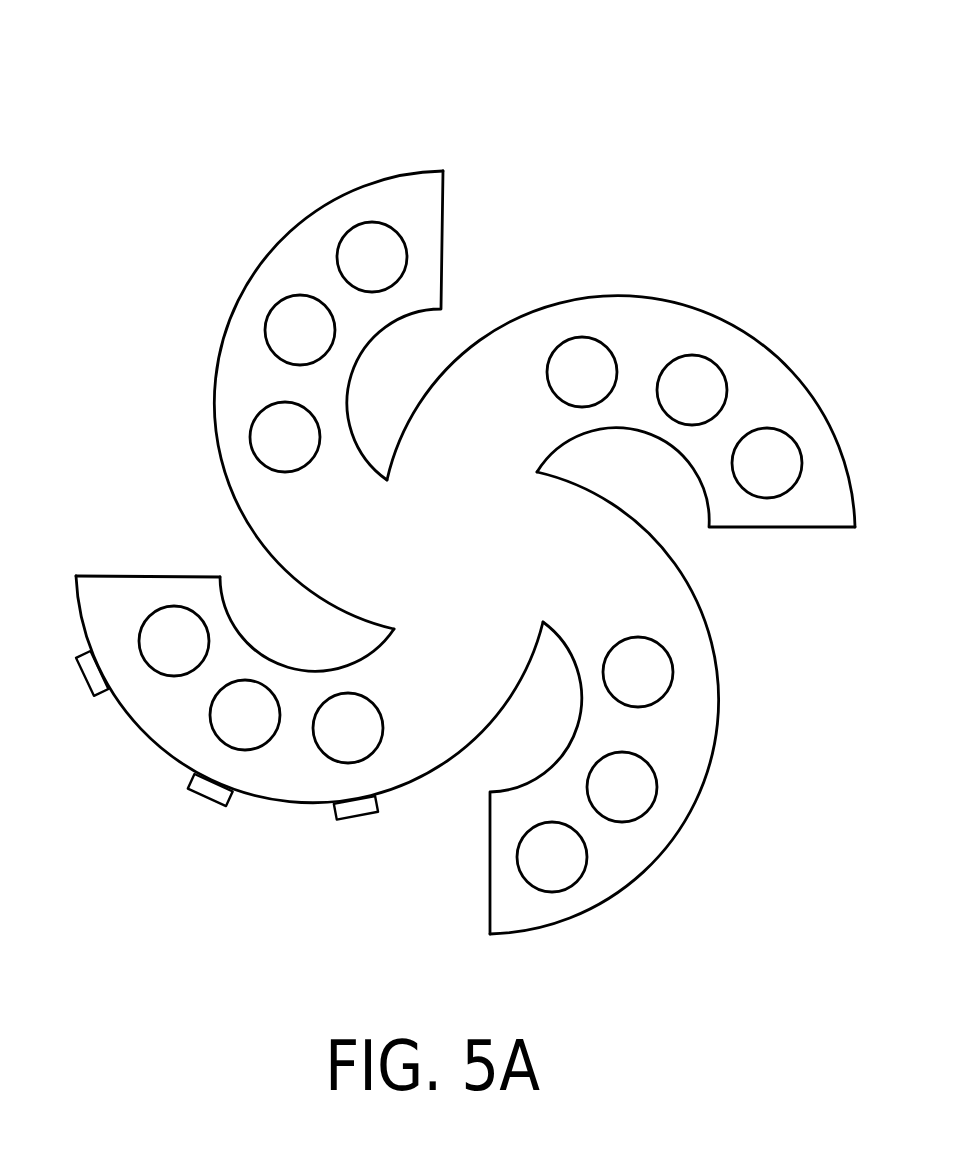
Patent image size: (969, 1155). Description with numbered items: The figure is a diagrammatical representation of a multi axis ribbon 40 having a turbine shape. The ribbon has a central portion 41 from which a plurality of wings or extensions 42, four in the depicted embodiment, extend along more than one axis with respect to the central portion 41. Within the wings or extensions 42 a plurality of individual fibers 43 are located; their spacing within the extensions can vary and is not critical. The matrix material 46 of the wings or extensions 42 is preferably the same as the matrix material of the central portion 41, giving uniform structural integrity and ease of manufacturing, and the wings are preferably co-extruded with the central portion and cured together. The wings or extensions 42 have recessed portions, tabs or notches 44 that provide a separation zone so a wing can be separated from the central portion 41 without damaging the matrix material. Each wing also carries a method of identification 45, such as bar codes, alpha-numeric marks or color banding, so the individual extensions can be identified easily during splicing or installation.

The multi axis ribbon 40 is at (441, 108).
The central portion 41 is at (436, 549).
The wings or extensions 42 is at (237, 367).
The individual fibers 43 is at (557, 893).
The recessed portions, tabs or notches 44 is at (350, 642).
The method of identification 45 is at (358, 817).
The matrix material 46 is at (303, 213).